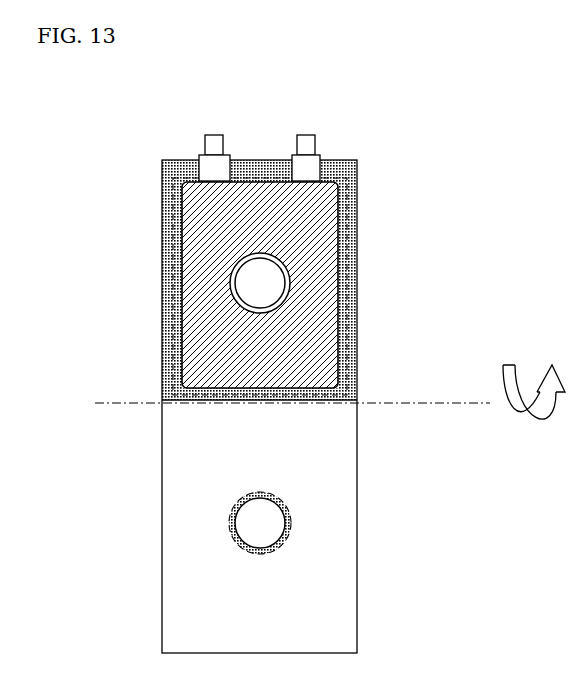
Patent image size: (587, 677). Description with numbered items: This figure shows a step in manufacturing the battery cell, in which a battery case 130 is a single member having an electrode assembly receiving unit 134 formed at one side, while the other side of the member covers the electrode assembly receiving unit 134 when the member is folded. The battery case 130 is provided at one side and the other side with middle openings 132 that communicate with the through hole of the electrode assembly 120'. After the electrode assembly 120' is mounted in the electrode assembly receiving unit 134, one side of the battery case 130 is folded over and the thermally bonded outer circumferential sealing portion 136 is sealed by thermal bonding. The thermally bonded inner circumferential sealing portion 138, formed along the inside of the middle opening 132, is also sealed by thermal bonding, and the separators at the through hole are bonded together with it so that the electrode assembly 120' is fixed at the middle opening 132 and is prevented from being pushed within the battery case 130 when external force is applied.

The battery case 130 is at (357, 577).
The thermally bonded outer circumferential sealing portion 136 is at (352, 175).
The electrode assembly receiving unit 134 is at (348, 327).
The electrode assembly 120' is at (197, 285).
The middle opening 132 is at (247, 283).
The thermally bonded inner circumferential sealing portion 138 is at (231, 530).